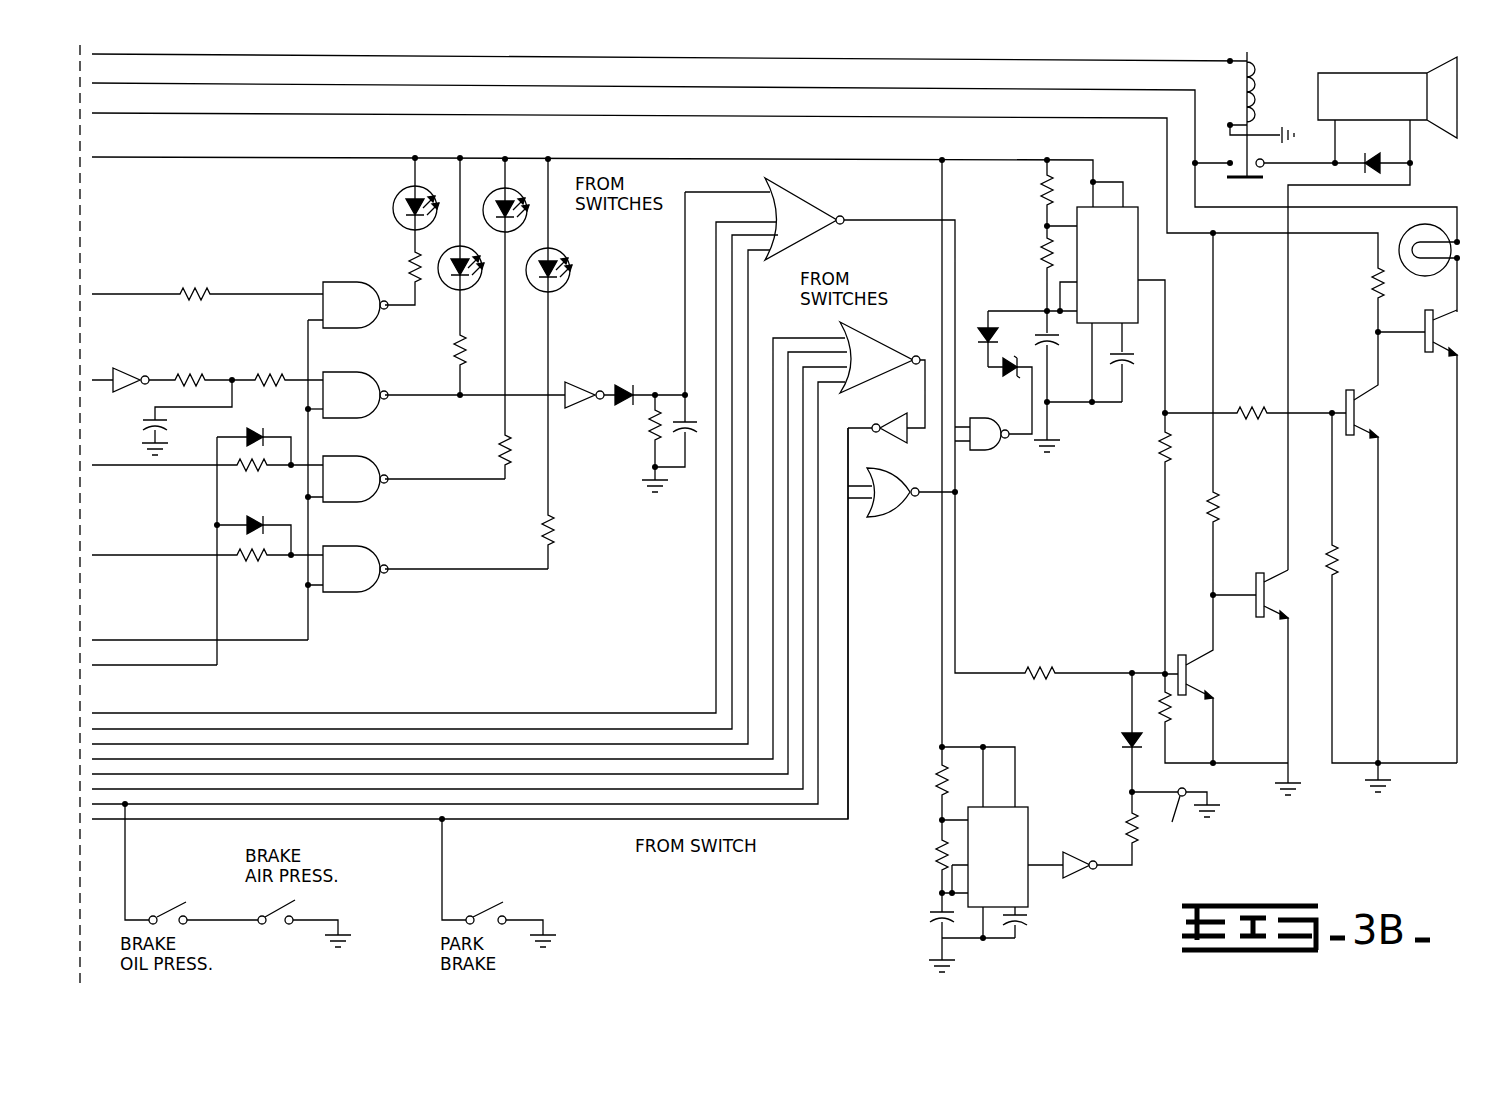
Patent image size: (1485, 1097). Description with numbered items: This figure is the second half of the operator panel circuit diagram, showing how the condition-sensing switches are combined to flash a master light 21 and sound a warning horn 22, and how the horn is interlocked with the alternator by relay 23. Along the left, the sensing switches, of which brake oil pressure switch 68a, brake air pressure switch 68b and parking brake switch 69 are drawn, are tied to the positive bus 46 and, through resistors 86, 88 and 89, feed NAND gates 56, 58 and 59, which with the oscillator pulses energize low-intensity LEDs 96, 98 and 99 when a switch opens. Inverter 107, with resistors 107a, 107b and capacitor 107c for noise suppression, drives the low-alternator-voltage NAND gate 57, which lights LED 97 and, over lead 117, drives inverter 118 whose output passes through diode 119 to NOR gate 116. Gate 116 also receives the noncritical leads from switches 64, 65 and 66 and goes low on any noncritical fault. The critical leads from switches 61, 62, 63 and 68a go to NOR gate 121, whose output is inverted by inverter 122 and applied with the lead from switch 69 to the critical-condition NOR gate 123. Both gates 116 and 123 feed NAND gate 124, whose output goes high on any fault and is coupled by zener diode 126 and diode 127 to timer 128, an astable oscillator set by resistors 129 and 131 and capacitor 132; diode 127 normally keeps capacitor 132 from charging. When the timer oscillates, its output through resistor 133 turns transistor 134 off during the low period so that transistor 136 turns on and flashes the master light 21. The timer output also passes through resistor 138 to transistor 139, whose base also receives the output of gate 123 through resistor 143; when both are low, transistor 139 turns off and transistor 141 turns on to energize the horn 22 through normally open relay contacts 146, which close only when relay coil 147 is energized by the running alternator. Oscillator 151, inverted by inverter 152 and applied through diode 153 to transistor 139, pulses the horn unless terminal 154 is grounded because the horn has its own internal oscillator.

The master light 21 is at (1410, 232).
The warning horn 22 is at (1387, 97).
The relay 23 is at (1262, 112).
The positive bus 46 is at (626, 158).
The NAND gate 56 is at (348, 461).
The low-alternator-voltage NAND gate 57 is at (346, 395).
The NAND gate 58 is at (405, 479).
The NAND gate 59 is at (426, 569).
The condition-sensing switch 61 is at (783, 334).
The condition-sensing switch 62 is at (828, 334).
The condition-sensing switch 63 is at (838, 385).
The condition-sensing switch 64 is at (716, 285).
The condition-sensing switch 65 is at (732, 306).
The condition-sensing switch 66 is at (748, 342).
The condition-sensing switch 68a is at (822, 408).
The condition-sensing switch 68b is at (282, 920).
The condition-sensing switch 69 is at (486, 910).
The resistor 86 is at (200, 284).
The resistor 88 is at (248, 466).
The resistor 89 is at (248, 556).
The LED 96 is at (402, 196).
The LED 97 is at (458, 300).
The LED 98 is at (500, 196).
The LED 99 is at (552, 292).
The inverter 107 is at (125, 366).
The resistor 107a is at (207, 368).
The resistor 107b is at (280, 370).
The capacitor 107c is at (166, 418).
The NOR gate 116 is at (852, 425).
The lead 117 is at (484, 398).
The inverter 118 is at (595, 360).
The diode 119 is at (640, 422).
The NOR gate 121 is at (882, 375).
The inverter 122 is at (900, 440).
The NOR gate 123 is at (880, 518).
The NAND gate 124 is at (980, 452).
The zener diode 126 is at (1013, 375).
The diode 127 is at (980, 330).
The timer 128 is at (1142, 270).
The resistor 129 is at (1040, 195).
The resistor 131 is at (1040, 258).
The capacitor 132 is at (1055, 345).
The resistor 133 is at (1250, 405).
The transistor 134 is at (1345, 385).
The transistor 136 is at (1432, 292).
The resistor 138 is at (1160, 448).
The transistor 139 is at (1190, 670).
The transistor 141 is at (1262, 572).
The resistor 143 is at (1032, 668).
The relay contacts 146 is at (1255, 178).
The relay coil 147 is at (1240, 92).
The oscillator 151 is at (1022, 800).
The inverter 152 is at (1068, 878).
The diode 153 is at (1122, 740).
The terminal 154 is at (1172, 825).